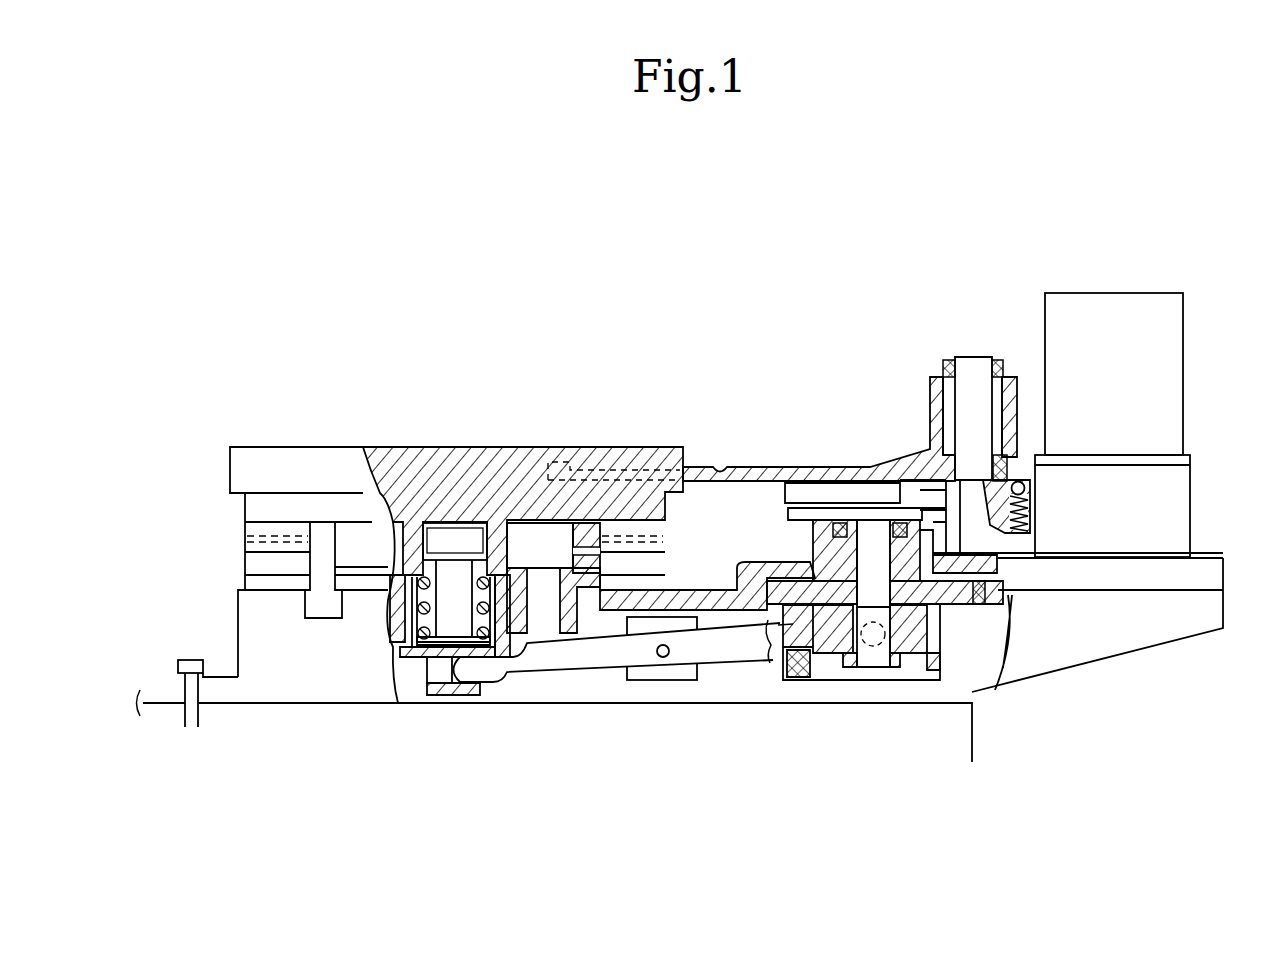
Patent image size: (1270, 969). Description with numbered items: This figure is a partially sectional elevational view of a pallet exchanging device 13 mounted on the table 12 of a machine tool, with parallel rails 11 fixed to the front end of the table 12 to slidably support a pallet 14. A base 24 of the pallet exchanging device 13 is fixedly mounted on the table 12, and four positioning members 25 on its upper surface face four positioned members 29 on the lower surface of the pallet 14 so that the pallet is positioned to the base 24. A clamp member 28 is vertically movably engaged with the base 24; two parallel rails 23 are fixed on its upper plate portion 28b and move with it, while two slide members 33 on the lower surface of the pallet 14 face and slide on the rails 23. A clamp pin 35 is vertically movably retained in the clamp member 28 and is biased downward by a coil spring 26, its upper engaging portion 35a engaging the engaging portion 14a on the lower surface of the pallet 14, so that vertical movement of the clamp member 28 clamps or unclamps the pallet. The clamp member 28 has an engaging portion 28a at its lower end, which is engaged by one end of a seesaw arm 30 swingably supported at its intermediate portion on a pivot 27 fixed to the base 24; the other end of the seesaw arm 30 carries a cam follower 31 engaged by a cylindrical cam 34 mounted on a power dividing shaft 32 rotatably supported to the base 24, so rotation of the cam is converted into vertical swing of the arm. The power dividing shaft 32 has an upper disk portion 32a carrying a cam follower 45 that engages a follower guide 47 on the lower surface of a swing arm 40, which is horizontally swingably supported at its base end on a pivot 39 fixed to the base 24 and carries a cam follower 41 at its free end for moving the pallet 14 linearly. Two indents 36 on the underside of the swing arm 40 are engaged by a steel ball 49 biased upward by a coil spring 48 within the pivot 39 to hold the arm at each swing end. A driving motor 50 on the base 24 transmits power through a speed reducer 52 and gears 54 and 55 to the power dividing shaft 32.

The parallel rails 11 is at (323, 560).
The table 12 is at (972, 738).
The pallet exchanging device 13 is at (266, 343).
The pallet 14 is at (272, 468).
The engaging portion 14a is at (530, 520).
The parallel rails 23 is at (600, 515).
The base 24 is at (268, 616).
The positioning members 25 is at (265, 566).
The coil spring 26 is at (400, 640).
The pivot 27 is at (663, 657).
The clamp member 28 is at (388, 618).
The engaging portion 28a is at (437, 662).
The upper plate portion 28b is at (392, 540).
The positioned members 29 is at (275, 525).
The seesaw arm 30 is at (541, 660).
The cam follower 31 is at (870, 634).
The power dividing shaft 32 is at (832, 663).
The upper disk portion 32a is at (862, 515).
The slide members 33 is at (588, 535).
The cylindrical cam 34 is at (783, 665).
The clamp pin 35 is at (450, 580).
The engaging portion 35a is at (470, 540).
The indents 36 is at (1043, 455).
The pivot 39 is at (968, 390).
The swing arm 40 is at (703, 470).
The cam follower 41 is at (560, 460).
The cam follower 45 is at (925, 495).
The follower guide 47 is at (835, 492).
The coil spring 48 is at (1035, 502).
The steel ball 49 is at (1025, 484).
The driving motor 50 is at (1170, 338).
The speed reducer 52 is at (1178, 490).
The gear 54 is at (1170, 541).
The gear 55 is at (1010, 668).